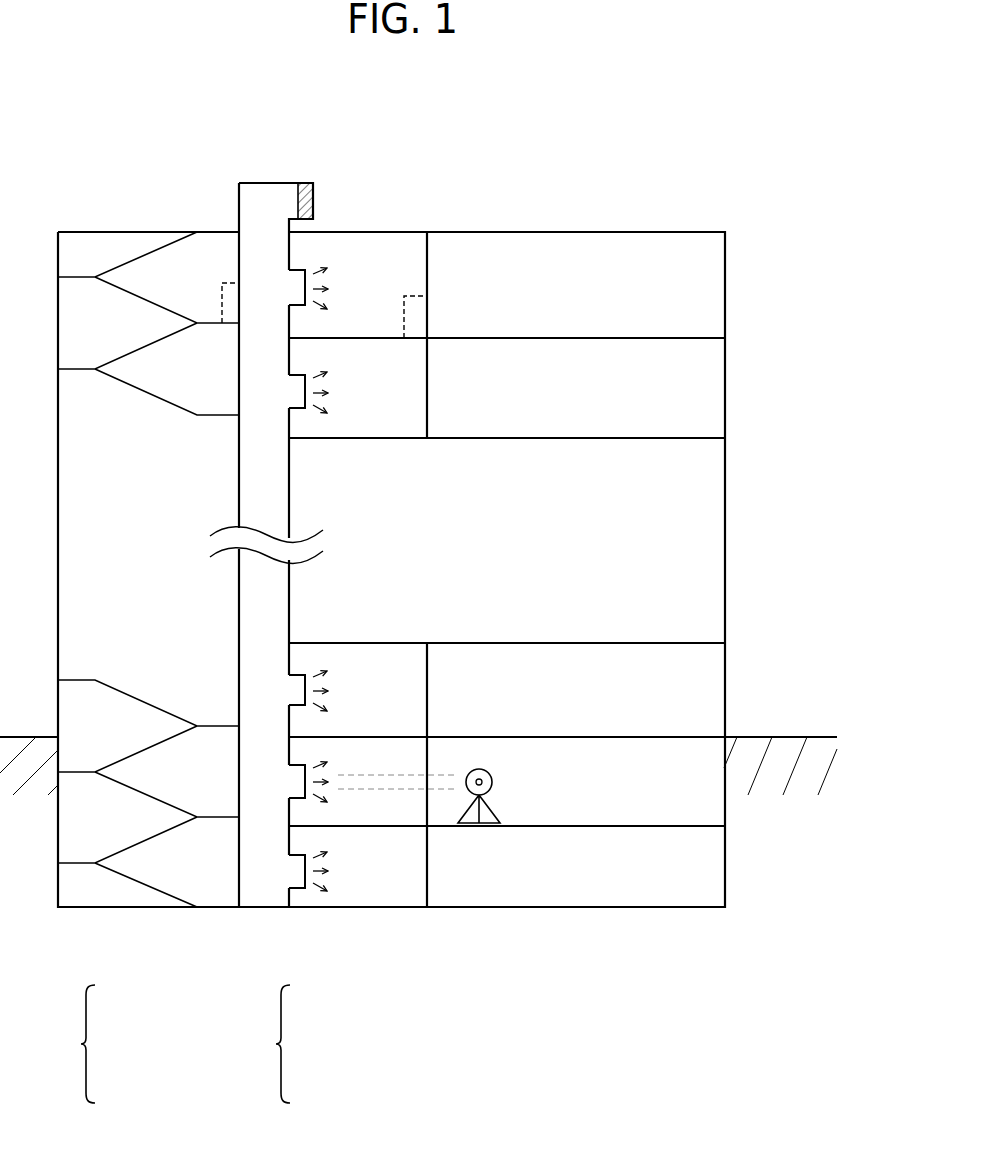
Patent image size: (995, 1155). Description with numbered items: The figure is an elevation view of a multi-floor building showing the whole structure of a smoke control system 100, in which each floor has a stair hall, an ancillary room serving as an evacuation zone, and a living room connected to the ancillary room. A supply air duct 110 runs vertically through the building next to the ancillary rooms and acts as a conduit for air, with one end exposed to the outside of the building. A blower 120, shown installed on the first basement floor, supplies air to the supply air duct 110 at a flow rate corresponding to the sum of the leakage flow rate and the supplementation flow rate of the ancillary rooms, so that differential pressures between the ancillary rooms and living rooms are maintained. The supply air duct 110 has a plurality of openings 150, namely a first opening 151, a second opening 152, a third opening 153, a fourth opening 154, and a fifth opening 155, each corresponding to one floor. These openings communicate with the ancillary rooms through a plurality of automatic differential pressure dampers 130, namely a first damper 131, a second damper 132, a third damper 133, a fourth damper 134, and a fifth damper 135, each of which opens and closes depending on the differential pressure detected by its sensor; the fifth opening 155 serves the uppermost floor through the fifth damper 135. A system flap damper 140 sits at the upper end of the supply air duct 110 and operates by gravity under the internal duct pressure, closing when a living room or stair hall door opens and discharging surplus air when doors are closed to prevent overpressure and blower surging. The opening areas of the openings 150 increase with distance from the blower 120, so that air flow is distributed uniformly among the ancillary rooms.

The smoke control system 100 is at (682, 117).
The supply air duct 110 is at (239, 876).
The blower 120 is at (490, 819).
The automatic differential pressure dampers 130 is at (285, 1045).
The first automatic differential pressure damper 131 is at (297, 888).
The second automatic differential pressure damper 132 is at (293, 798).
The third automatic differential pressure damper 133 is at (294, 675).
The fourth automatic differential pressure damper 134 is at (297, 409).
The fifth automatic differential pressure damper 135 is at (295, 270).
The system flap damper 140 is at (304, 183).
The openings 150 is at (91, 1045).
The first opening 151 is at (288, 870).
The second opening 152 is at (288, 785).
The third opening 153 is at (288, 695).
The fourth opening 154 is at (288, 390).
The fifth opening 155 is at (288, 287).